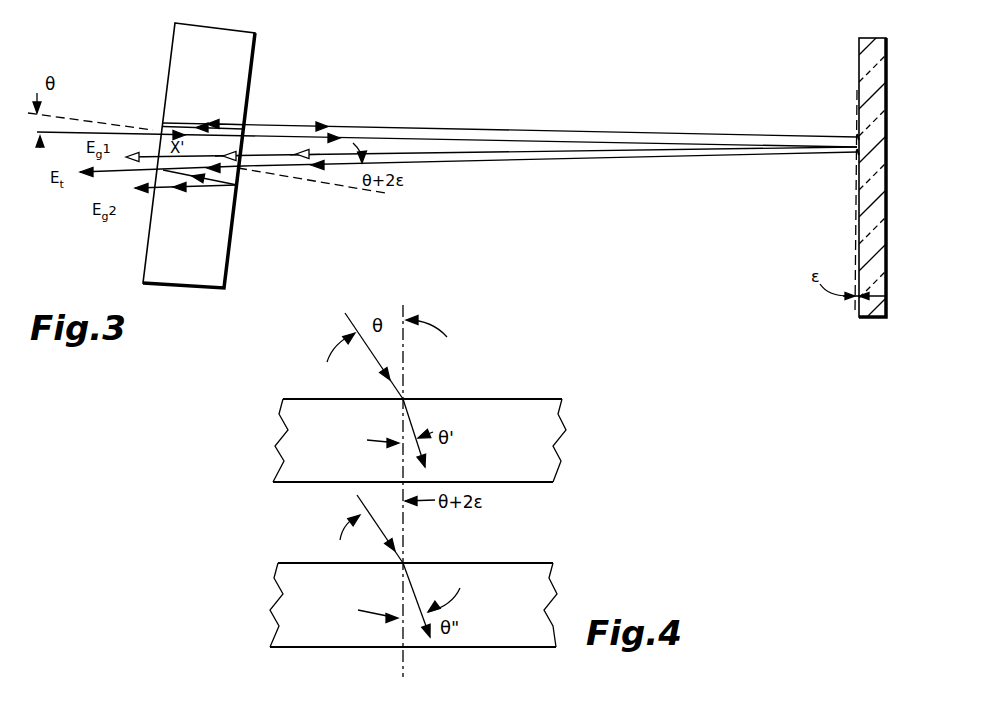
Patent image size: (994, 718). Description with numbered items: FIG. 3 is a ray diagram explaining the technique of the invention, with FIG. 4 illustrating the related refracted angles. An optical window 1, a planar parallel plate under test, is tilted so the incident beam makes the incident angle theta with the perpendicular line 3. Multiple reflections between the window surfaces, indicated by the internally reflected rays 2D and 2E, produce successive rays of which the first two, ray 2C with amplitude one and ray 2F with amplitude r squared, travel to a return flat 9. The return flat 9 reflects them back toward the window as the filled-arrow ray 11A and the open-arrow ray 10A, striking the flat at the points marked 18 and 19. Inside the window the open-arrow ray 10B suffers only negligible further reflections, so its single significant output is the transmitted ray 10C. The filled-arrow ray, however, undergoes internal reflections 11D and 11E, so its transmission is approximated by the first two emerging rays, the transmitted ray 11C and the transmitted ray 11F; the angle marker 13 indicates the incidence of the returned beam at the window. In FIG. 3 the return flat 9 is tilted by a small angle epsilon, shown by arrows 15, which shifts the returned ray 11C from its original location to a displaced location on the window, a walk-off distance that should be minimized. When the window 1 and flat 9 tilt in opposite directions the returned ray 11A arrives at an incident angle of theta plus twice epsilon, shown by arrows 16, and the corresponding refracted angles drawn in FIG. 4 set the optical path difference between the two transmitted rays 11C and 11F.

The optical window 1 is at (171, 44).
The first transmitted ray 2C is at (336, 137).
The internally reflected ray 2D is at (196, 126).
The internally reflected ray 2E is at (216, 122).
The second transmitted ray 2F is at (322, 124).
The perpendicular line 3 is at (68, 96).
The return flat 9 is at (859, 42).
The open-arrow returned ray 10A is at (298, 160).
The open-arrow ray inside window 10B is at (243, 146).
The transmitted open-arrow ray 10C is at (126, 154).
The filled-arrow returned ray 11A is at (318, 172).
The transmitted ray Et 11C is at (86, 180).
The internal reflection 11D is at (194, 184).
The internal reflection 11E is at (180, 197).
The transmitted ray Eg2 11F is at (137, 192).
The angle of incidence 13 is at (42, 166).
The tilt arrows 15 is at (850, 297).
The angle arrows 16 is at (358, 196).
The point of incidence on mirror 18 is at (857, 137).
The point of incidence on mirror 19 is at (856, 153).